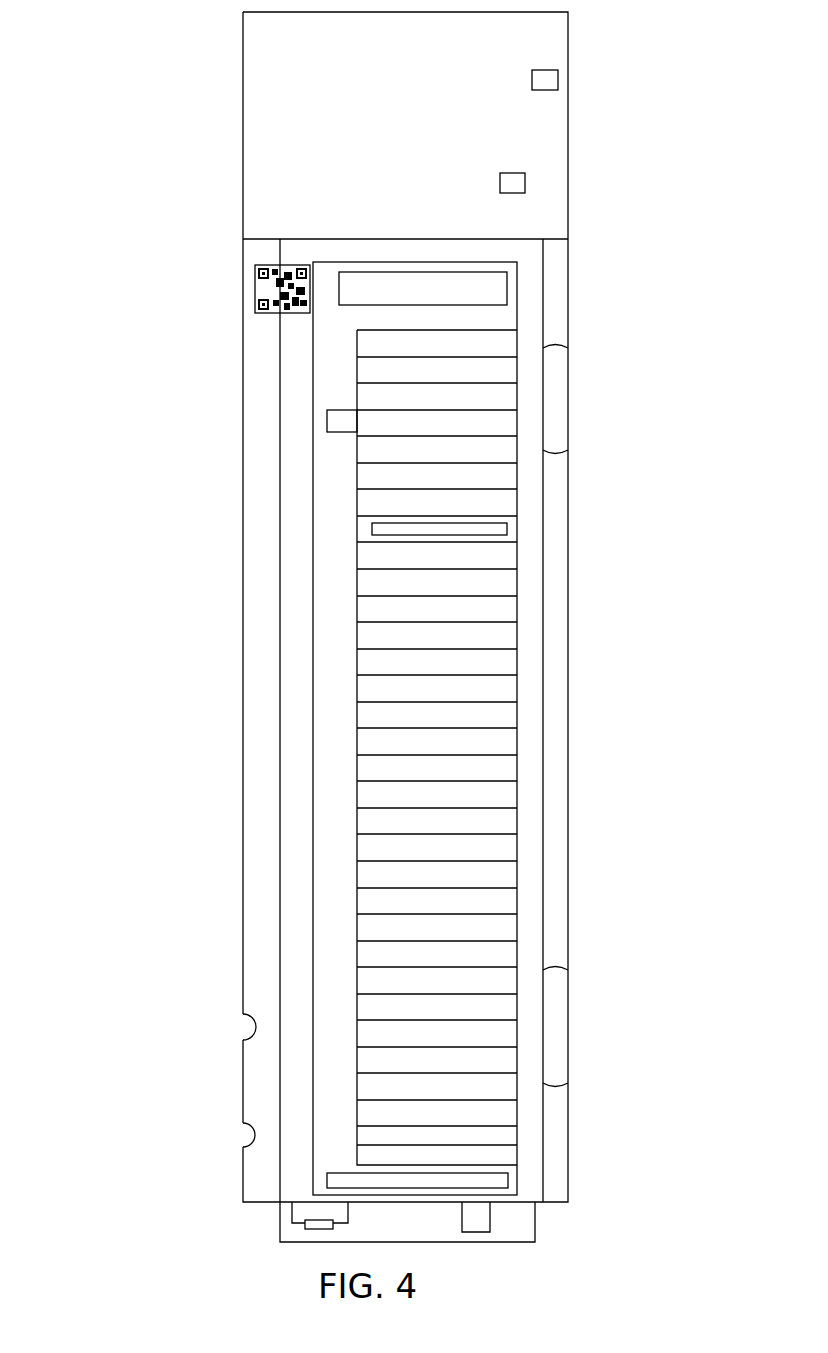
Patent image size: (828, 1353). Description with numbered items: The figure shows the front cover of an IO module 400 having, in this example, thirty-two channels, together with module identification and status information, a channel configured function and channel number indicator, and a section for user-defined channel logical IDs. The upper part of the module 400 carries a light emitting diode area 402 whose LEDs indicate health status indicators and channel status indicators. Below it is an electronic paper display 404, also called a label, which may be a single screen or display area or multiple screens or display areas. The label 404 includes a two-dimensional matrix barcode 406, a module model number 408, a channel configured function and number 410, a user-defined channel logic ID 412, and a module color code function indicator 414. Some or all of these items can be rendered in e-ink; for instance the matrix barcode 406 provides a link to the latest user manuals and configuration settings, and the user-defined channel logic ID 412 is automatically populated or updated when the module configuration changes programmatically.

The IO module 400 is at (200, 32).
The light emitting diode area 402 is at (558, 78).
The electronic paper display 404 is at (625, 607).
The 2D matrix barcode 406 is at (257, 290).
The module model number 408 is at (508, 285).
The channel configured function and number 410 is at (327, 417).
The user-defined channel logic ID 412 is at (508, 527).
The module color code function indicator 414 is at (508, 1180).